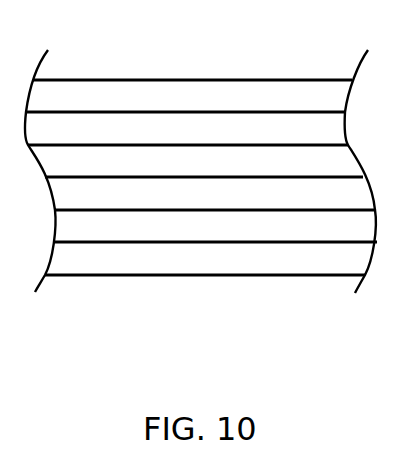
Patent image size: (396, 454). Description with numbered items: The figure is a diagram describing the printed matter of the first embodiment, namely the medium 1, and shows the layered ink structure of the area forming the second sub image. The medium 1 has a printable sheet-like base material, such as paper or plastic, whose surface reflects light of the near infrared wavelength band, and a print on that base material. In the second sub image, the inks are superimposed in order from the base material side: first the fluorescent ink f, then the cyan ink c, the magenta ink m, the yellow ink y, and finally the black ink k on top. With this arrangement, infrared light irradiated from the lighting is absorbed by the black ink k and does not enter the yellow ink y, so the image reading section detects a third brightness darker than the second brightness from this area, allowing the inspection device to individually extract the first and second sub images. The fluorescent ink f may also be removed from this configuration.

The medium 1 is at (95, 263).
The black ink k is at (78, 97).
The yellow ink y is at (142, 133).
The magenta ink m is at (220, 162).
The fluorescent ink f is at (177, 227).
The cyan ink c is at (263, 193).